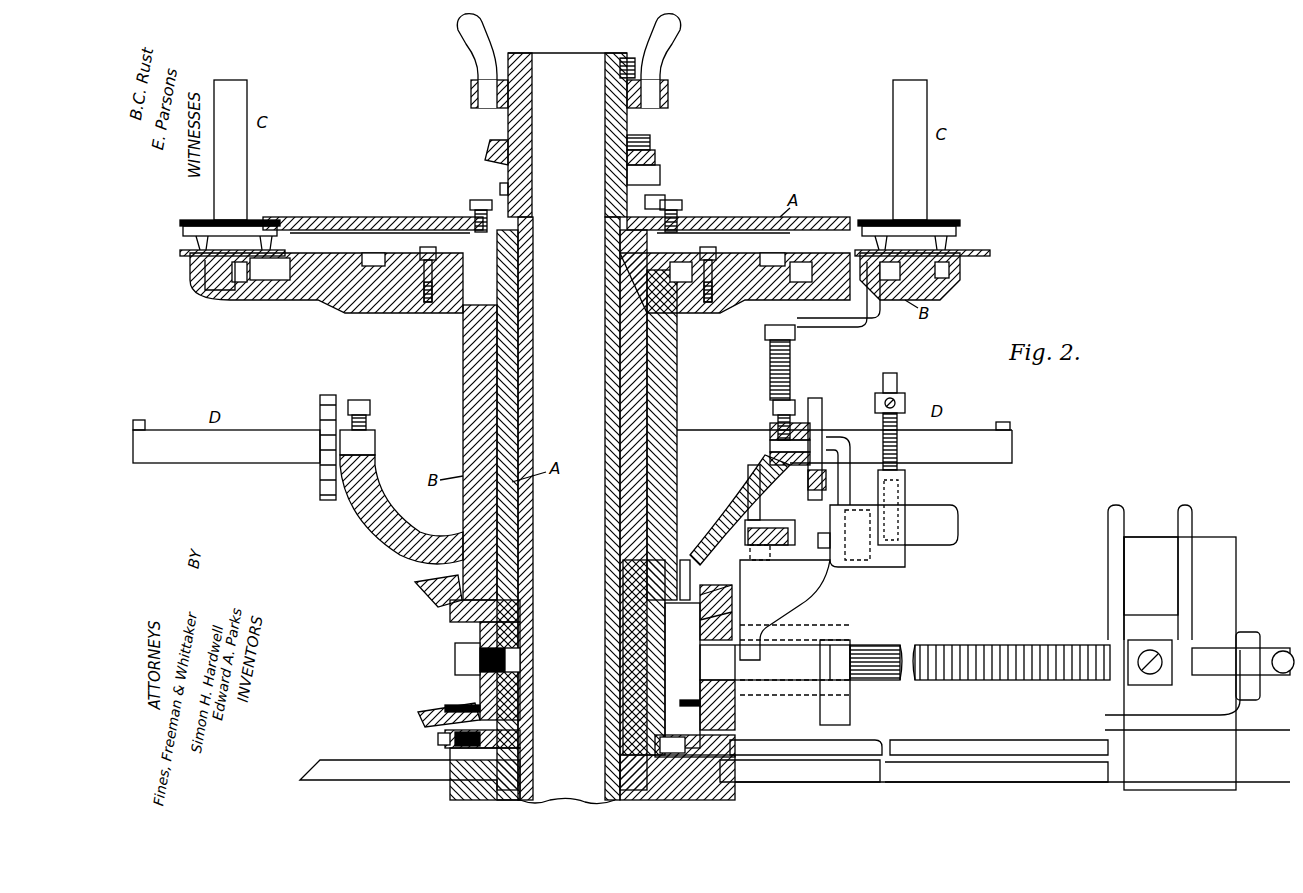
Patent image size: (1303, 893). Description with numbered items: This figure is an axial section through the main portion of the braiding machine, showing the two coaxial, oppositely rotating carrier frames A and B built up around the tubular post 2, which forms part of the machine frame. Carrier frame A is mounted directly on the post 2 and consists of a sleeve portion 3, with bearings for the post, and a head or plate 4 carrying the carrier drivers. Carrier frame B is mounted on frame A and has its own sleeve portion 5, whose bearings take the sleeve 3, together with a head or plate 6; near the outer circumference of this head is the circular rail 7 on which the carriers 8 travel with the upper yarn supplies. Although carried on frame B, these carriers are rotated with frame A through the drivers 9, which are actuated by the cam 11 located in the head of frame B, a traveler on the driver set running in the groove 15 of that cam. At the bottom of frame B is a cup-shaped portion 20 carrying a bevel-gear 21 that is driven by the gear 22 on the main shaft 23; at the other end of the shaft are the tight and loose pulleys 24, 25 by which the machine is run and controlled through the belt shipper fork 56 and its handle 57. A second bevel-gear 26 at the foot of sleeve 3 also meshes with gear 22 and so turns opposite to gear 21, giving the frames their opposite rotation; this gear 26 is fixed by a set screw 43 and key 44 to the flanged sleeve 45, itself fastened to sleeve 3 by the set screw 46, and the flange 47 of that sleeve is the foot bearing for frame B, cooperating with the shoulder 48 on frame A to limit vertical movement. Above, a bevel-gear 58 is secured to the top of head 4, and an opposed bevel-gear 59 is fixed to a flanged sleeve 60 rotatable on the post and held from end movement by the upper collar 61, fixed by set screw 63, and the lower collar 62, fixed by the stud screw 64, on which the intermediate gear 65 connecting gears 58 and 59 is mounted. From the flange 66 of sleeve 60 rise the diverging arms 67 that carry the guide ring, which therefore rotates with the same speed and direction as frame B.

The post 2 is at (533, 304).
The sleeve portion 3 is at (640, 356).
The head or plate 4 is at (712, 217).
The sleeve portion 5 is at (463, 356).
The head or plate 6 is at (372, 313).
The circular rail 7 is at (215, 274).
The carriers 8 is at (180, 253).
The drivers 9 is at (690, 250).
The cam 11 is at (420, 256).
The groove 15 is at (573, 251).
The cup-shaped portion 20 is at (392, 541).
The bevel-gear 21 is at (425, 590).
The gear 22 is at (700, 632).
The main shaft 23 is at (775, 662).
The tight pulley 24 is at (1151, 601).
The loose pulley 25 is at (1172, 653).
The bevel-gear 26 is at (430, 716).
The set screw 43 is at (442, 744).
The key 44 is at (695, 748).
The flanged sleeve 45 is at (480, 693).
The set screw 46 is at (455, 658).
The flange 47 is at (455, 618).
The shoulder 48 is at (482, 252).
The belt shipper fork 56 is at (1108, 540).
The handle 57 is at (1283, 673).
The bevel-gear 58 is at (667, 203).
The bevel-gear 59 is at (490, 160).
The flanged sleeve 60 is at (508, 128).
The upper collar 61 is at (517, 53).
The lower collar 62 is at (500, 188).
The set screw 63 is at (632, 58).
The stud screw 64 is at (660, 172).
The intermediate gear 65 is at (662, 170).
The flange 66 is at (471, 91).
The arms 67 is at (468, 36).